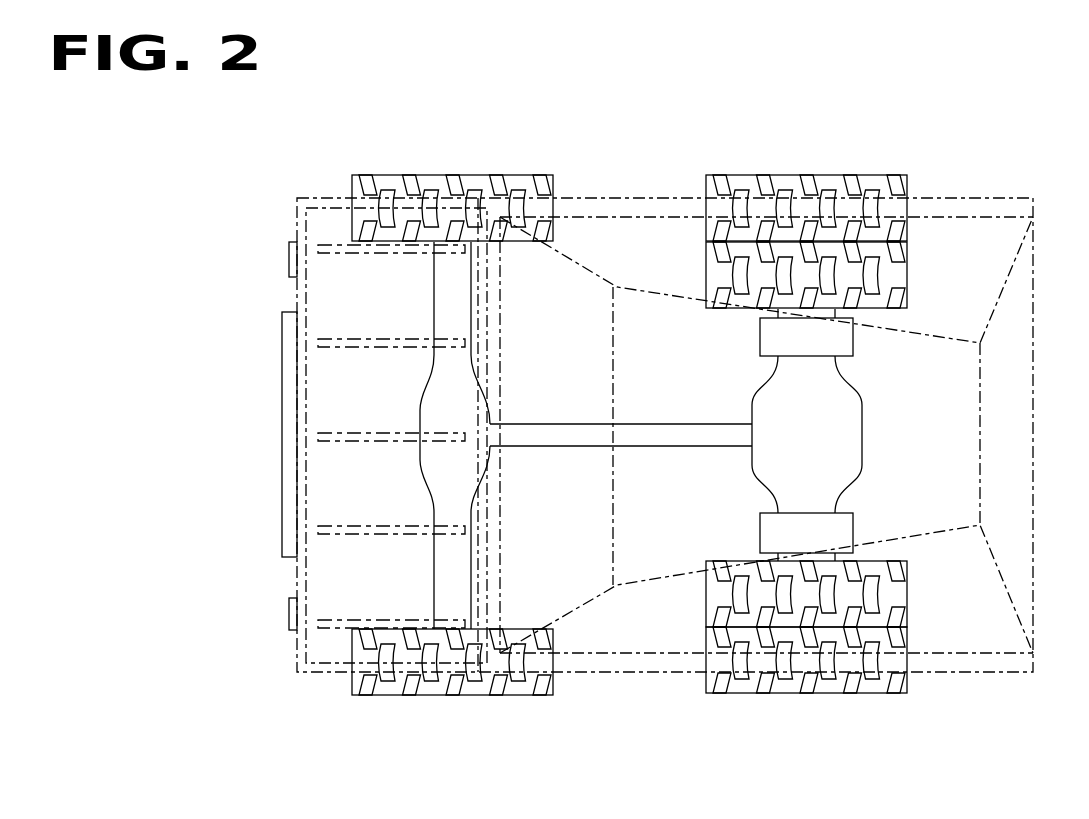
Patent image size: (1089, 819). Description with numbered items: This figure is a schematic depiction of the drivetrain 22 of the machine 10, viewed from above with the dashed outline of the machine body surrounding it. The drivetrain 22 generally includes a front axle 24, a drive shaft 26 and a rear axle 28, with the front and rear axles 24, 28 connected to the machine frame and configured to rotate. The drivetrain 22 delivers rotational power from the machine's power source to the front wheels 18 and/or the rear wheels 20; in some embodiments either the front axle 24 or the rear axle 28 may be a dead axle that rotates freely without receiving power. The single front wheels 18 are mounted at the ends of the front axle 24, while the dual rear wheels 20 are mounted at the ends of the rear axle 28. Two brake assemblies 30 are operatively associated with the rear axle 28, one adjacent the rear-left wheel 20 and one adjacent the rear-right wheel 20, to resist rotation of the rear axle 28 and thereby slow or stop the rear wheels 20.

The machine 10 is at (1000, 94).
The front wheels 18 is at (467, 176).
The rear wheels 20 is at (826, 176).
The drivetrain 22 is at (599, 372).
The front axle 24 is at (433, 290).
The drive shaft 26 is at (680, 423).
The rear axle 28 is at (862, 390).
The brake assembly 30 is at (853, 342).